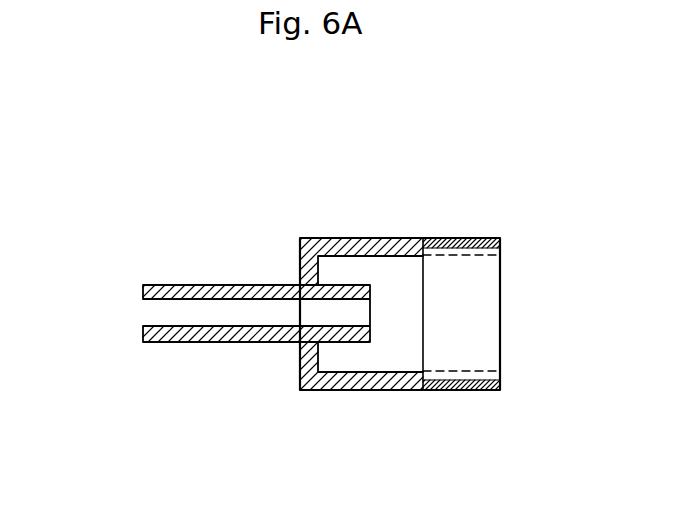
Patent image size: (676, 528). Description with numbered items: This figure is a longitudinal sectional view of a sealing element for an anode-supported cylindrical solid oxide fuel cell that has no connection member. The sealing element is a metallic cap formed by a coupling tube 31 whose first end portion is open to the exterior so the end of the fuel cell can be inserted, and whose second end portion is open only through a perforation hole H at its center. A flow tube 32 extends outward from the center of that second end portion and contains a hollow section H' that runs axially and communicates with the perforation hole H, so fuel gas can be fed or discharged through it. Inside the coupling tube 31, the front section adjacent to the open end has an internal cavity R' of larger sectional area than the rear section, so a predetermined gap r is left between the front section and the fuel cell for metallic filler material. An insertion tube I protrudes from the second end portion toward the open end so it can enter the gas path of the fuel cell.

The coupling tube 31 is at (380, 377).
The flow tube 32 is at (183, 337).
The perforation hole H is at (301, 262).
The hollow section H' is at (126, 317).
The insertion tube I is at (343, 280).
The gap r is at (483, 252).
The internal cavity of the front section R' is at (493, 314).